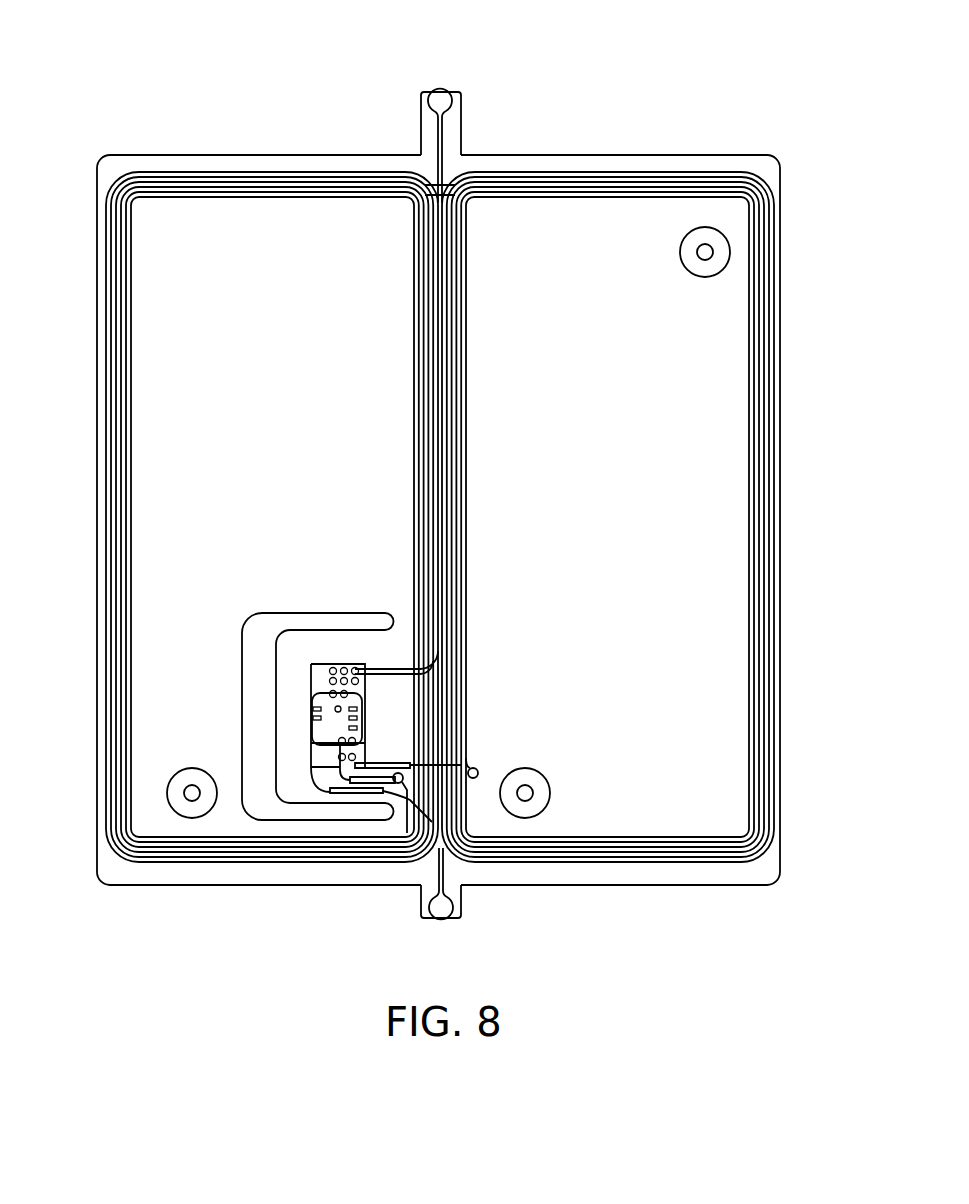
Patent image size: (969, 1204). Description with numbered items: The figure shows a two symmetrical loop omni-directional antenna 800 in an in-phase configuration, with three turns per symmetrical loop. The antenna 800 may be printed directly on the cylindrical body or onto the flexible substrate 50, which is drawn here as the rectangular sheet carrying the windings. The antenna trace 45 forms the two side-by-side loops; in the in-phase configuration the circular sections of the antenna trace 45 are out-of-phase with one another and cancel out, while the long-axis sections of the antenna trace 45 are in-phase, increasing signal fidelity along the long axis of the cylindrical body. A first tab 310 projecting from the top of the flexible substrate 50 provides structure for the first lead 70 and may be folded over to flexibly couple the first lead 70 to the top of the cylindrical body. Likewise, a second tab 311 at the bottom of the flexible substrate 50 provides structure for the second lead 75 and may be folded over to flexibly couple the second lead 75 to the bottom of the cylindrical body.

The two symmetrical loop omni-directional antenna 800 is at (465, 506).
The flexible substrate 50 is at (438, 508).
The antenna trace 45 is at (758, 661).
The first lead 70 is at (440, 104).
The second lead 75 is at (437, 905).
The first tab 310 is at (468, 124).
The second tab 311 is at (480, 906).